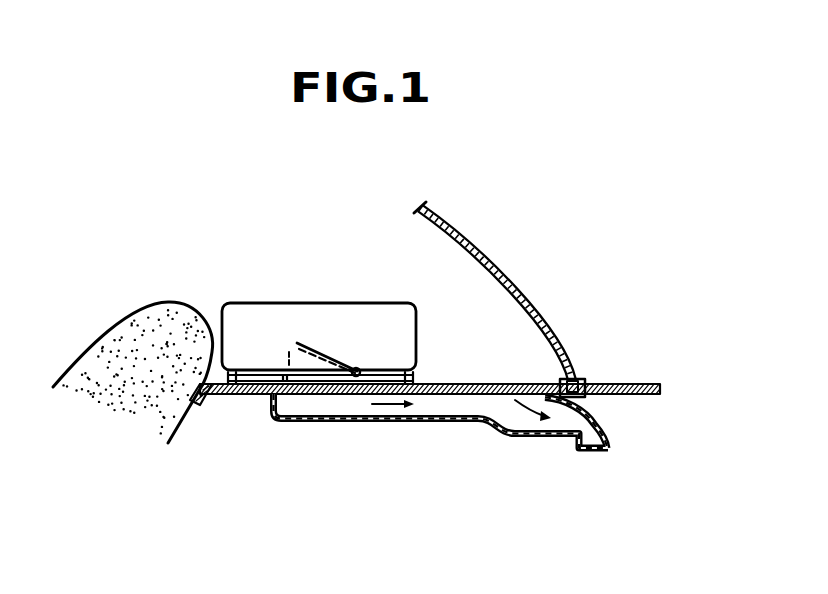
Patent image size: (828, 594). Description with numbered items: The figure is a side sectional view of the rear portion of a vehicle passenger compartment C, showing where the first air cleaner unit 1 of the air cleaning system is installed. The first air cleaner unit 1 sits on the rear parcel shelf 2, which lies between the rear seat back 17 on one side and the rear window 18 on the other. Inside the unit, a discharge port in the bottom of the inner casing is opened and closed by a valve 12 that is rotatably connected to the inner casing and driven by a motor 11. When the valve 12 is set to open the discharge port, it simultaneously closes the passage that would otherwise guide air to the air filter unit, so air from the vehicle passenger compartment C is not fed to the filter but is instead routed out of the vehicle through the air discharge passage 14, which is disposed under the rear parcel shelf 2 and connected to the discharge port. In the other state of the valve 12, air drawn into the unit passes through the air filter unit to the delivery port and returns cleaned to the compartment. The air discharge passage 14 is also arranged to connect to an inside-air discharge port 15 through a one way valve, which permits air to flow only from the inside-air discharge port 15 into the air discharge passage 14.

The first air cleaner unit 1 is at (361, 304).
The rear parcel shelf 2 is at (243, 395).
The motor 11 is at (365, 373).
The valve 12 is at (300, 342).
The air discharge passage 14 is at (458, 412).
The inside-air discharge port 15 is at (507, 384).
The rear seat back 17 is at (128, 326).
The rear window 18 is at (548, 326).
The vehicle passenger compartment C is at (188, 246).